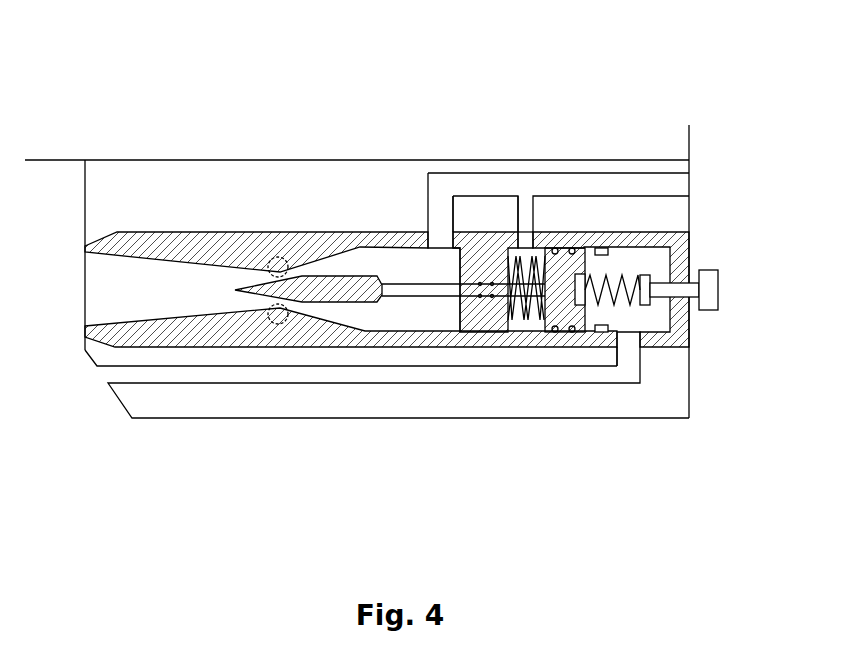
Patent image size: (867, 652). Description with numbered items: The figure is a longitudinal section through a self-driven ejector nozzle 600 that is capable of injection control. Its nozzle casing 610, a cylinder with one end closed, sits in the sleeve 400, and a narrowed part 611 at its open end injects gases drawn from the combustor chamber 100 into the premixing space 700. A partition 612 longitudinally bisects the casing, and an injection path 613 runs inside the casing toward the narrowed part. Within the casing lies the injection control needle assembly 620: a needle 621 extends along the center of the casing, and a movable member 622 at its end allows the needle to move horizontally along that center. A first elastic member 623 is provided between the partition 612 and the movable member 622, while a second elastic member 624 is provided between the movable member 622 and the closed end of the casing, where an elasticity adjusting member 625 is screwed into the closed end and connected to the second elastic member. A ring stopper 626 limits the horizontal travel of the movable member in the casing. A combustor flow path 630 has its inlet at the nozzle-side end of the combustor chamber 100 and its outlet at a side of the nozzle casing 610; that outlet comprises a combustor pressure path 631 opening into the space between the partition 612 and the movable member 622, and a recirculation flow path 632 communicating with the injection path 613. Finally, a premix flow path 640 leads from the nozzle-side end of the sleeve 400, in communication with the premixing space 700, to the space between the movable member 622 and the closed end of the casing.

The combustor chamber 100 is at (772, 206).
The sleeve 400 is at (110, 193).
The ejector nozzle 600 is at (305, 85).
The nozzle casing 610 is at (147, 245).
The narrowed part 611 is at (278, 256).
The partition 612 is at (485, 312).
The injection path 613 is at (153, 300).
The injection control needle assembly 620 is at (407, 255).
The needle 621 is at (360, 284).
The movable member 622 is at (557, 249).
The first elastic member 623 is at (525, 312).
The second elastic member 624 is at (612, 275).
The elasticity adjusting member 625 is at (712, 302).
The ring stopper 626 is at (618, 336).
The combustor flow path 630 is at (645, 185).
The combustor pressure path 631 is at (526, 225).
The recirculation flow path 632 is at (445, 215).
The premix flow path 640 is at (378, 385).
The premixing space 700 is at (63, 311).